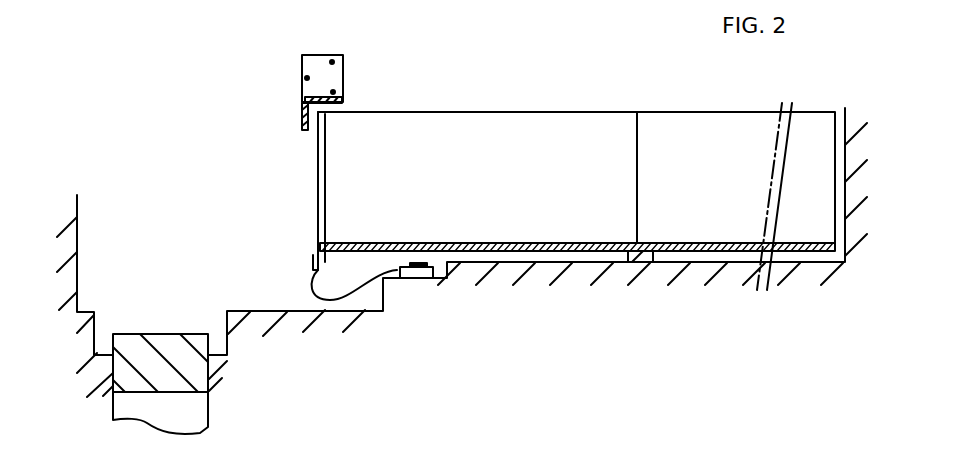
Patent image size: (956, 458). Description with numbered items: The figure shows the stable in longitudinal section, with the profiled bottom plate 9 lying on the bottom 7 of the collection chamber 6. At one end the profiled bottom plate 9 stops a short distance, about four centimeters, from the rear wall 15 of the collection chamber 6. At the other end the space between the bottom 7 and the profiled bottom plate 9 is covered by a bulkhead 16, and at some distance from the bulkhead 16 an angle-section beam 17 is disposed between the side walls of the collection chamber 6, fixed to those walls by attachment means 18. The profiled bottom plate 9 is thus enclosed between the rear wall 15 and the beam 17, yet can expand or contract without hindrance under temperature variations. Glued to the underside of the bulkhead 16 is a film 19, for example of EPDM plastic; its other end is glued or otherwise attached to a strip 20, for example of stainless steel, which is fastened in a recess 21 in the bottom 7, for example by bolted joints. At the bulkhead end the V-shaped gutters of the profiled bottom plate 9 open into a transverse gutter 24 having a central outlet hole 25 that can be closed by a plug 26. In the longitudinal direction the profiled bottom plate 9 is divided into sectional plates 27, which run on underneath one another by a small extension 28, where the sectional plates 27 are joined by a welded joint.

The collection chamber 6 is at (226, 138).
The bottom 7 is at (518, 265).
The profiled bottom plate 9 is at (478, 253).
The rear wall 15 is at (805, 252).
The bulkhead 16 is at (326, 148).
The angle-section beam 17 is at (343, 93).
The attachment means 18 is at (333, 75).
The film 19 is at (338, 300).
The strip 20 is at (400, 271).
The recess 21 is at (435, 246).
The transverse gutter 24 is at (108, 172).
The central outlet hole 25 is at (147, 406).
The plug 26 is at (208, 388).
The sectional plates 27 is at (655, 213).
The extension 28 is at (650, 255).